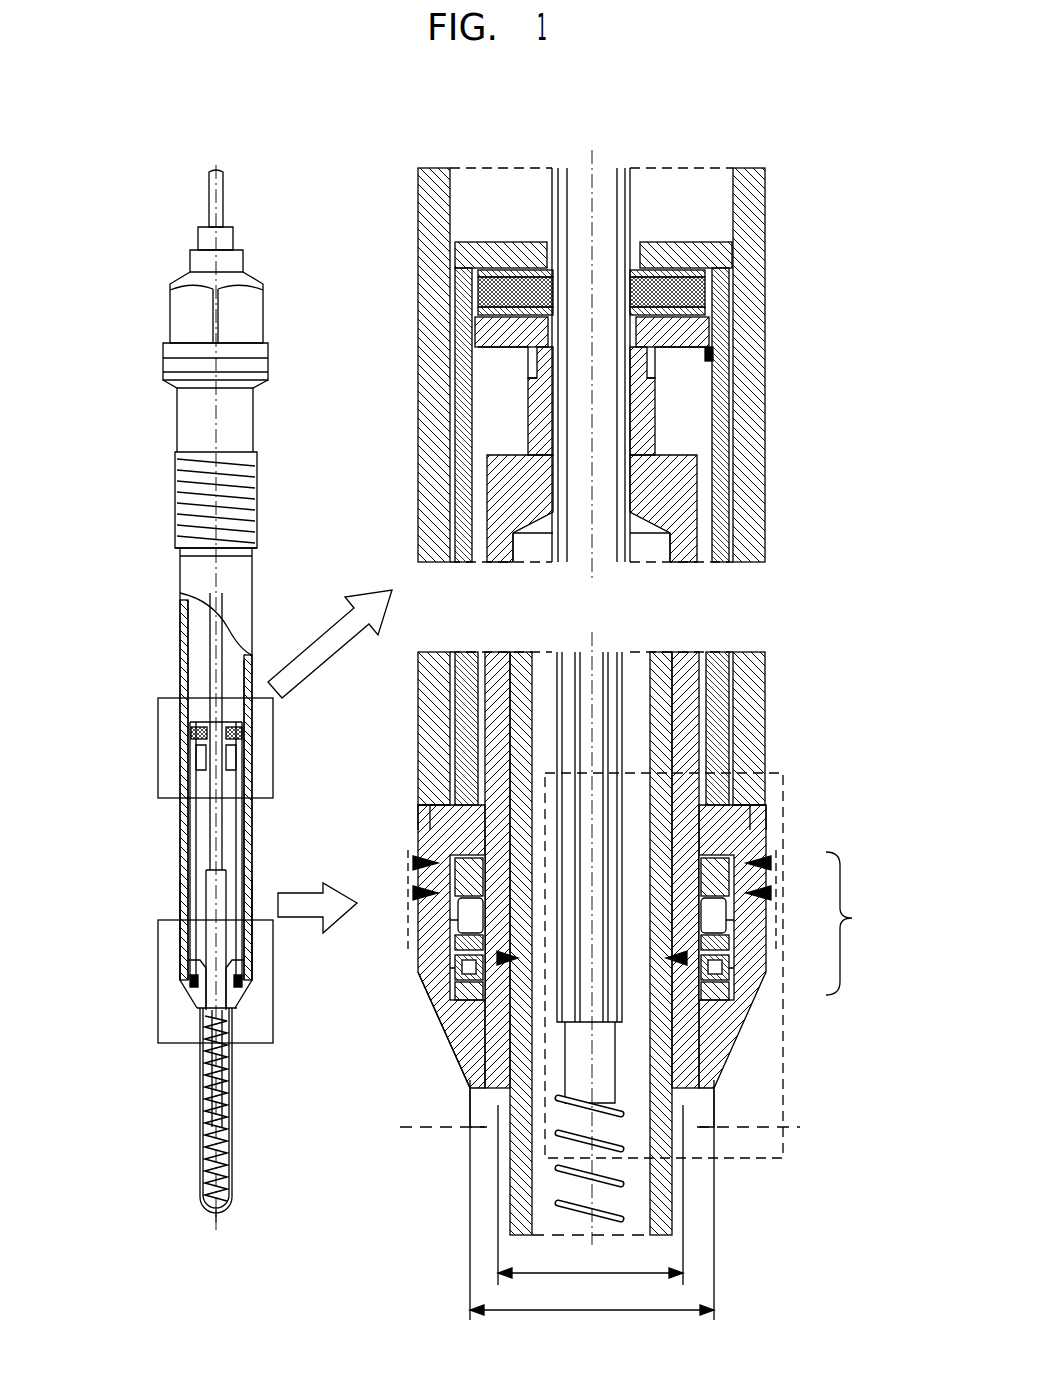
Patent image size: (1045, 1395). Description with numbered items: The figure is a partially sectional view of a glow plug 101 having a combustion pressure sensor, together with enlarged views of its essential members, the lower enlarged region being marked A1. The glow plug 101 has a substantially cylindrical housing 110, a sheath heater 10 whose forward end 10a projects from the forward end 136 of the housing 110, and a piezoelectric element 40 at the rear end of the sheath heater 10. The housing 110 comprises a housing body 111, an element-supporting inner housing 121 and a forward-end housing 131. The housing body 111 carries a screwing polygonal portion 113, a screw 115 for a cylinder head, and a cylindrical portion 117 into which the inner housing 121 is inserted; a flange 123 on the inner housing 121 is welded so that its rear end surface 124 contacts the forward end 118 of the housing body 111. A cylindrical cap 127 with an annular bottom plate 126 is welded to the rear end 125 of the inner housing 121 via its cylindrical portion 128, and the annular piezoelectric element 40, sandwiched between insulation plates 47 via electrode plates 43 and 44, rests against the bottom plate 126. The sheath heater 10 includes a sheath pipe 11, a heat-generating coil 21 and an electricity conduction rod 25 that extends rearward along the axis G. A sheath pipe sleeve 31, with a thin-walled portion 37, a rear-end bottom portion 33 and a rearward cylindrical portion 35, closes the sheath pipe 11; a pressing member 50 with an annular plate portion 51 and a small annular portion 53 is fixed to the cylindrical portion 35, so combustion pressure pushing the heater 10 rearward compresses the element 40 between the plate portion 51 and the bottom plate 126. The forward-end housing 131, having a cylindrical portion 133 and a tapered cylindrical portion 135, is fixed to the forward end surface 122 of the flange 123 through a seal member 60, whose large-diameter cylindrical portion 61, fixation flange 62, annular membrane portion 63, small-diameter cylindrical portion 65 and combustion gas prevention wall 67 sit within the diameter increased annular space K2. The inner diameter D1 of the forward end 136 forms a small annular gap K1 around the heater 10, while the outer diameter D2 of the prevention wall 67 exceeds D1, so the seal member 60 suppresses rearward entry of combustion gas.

The glow plug 101 is at (170, 432).
The sheath heater 10 is at (200, 1106).
The forward end of the sheath heater 10a is at (218, 1215).
The sheath pipe 11 is at (228, 1078).
The heat-generating coil 21 is at (218, 1172).
The electricity conduction rod 25 is at (210, 203).
The sheath pipe sleeve 31 is at (700, 545).
The rear-end bottom portion 33 is at (676, 455).
The cylindrical portion of the sheath pipe sleeve 35 is at (528, 418).
The thin-walled portion 37 is at (452, 924).
The piezoelectric element 40 is at (191, 731).
The electrode plate 43 is at (478, 314).
The electrode plate 44 is at (478, 274).
The insulation plate 47 is at (705, 270).
The pressing member 50 is at (472, 332).
The annular plate portion 51 is at (508, 358).
The small annular portion 53 is at (645, 368).
The seal member 60 is at (852, 918).
The large-diameter cylindrical portion 61 is at (725, 912).
The fixation flange 62 is at (740, 858).
The annular membrane portion 63 is at (715, 942).
The small-diameter cylindrical portion 65 is at (715, 968).
The combustion gas prevention wall 67 is at (740, 990).
The housing 110 is at (181, 568).
The housing body 111 is at (180, 858).
The screwing polygonal portion 113 is at (180, 318).
The screw 115 is at (178, 482).
The cylindrical portion of the housing body 117 is at (183, 817).
The forward end of the housing body 118 is at (430, 827).
The element-supporting inner housing 121 is at (190, 752).
The forward end surface of the flange 122 is at (418, 876).
The flange 123 is at (752, 827).
The rear end surface of the flange 124 is at (450, 792).
The rear end of the element-supporting inner housing 125 is at (713, 366).
The annular bottom plate 126 is at (502, 242).
The cylindrical cap 127 is at (668, 244).
The cylindrical portion of the cap 128 is at (705, 300).
The forward-end housing 131 is at (190, 980).
The cylindrical portion of the forward-end housing 133 is at (450, 950).
The tapered cylindrical portion 135 is at (455, 1050).
The forward end of the housing 136 is at (198, 1008).
The axis G is at (216, 428).
The region A1 is at (783, 1032).
The annular gap K1 is at (690, 1100).
The diameter increased annular space K2 is at (482, 960).
The inner diameter of the forward end D1 is at (590, 1195).
The outer diameter of the combustion gas prevention wall D2 is at (592, 1200).